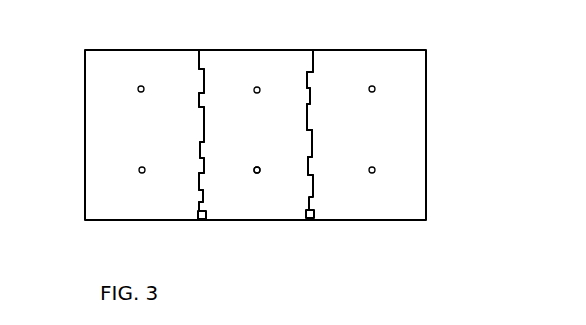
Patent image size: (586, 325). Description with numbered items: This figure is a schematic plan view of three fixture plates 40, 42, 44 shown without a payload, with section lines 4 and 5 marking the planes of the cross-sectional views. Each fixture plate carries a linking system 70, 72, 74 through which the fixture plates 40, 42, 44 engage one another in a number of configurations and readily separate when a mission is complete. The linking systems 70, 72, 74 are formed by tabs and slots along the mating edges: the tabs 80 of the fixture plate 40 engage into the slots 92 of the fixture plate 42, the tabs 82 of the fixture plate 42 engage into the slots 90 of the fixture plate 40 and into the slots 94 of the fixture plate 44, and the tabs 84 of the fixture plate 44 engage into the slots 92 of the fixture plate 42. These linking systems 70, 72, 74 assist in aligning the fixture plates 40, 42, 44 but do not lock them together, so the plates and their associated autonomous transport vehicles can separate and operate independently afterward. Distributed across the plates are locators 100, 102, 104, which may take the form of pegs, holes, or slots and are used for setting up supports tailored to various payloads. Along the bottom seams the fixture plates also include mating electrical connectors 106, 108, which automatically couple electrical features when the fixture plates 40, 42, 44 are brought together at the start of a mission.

The section line 4- 4 is at (387, 33).
The section line 5- 5 is at (105, 137).
The fixture plate 40 is at (148, 50).
The fixture plate 42 is at (253, 50).
The fixture plate 44 is at (428, 50).
The linking system 70 is at (213, 157).
The linking system 72 is at (190, 111).
The linking system 74 is at (300, 128).
The tabs 80 is at (204, 120).
The tabs 82 is at (199, 186).
The tabs 84 is at (307, 86).
The slots 90 is at (204, 104).
The slots 92 is at (199, 168).
The slots 94 is at (308, 185).
The locator 100 is at (139, 76).
The locator 102 is at (251, 183).
The locator 104 is at (386, 172).
The mating electrical connector 106 is at (203, 220).
The mating electrical connector 108 is at (309, 220).